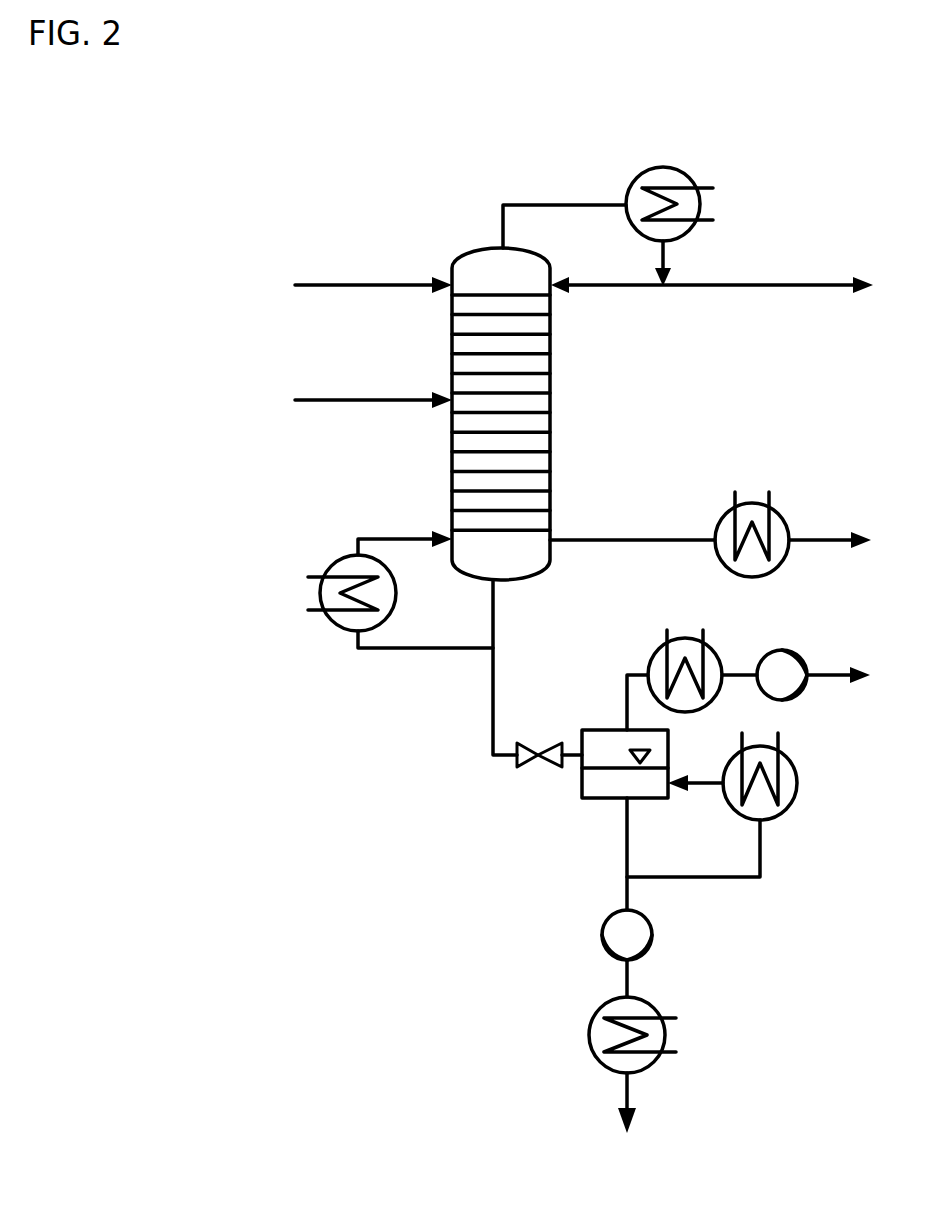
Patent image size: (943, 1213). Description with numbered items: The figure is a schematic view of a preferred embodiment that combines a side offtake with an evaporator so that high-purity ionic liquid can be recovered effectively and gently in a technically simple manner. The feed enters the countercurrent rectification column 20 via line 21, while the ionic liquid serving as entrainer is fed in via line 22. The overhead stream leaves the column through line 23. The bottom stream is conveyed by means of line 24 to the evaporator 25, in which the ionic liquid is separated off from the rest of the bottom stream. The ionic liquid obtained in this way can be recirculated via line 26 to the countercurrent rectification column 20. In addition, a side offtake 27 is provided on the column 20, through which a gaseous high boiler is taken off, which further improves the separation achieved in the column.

The countercurrent rectification column 20 is at (550, 345).
The line 21 is at (373, 381).
The line 22 is at (373, 265).
The line 23 is at (712, 265).
The line 24 is at (481, 667).
The evaporator 25 is at (608, 742).
The line 26 is at (650, 1107).
The side offtake 27 is at (710, 518).